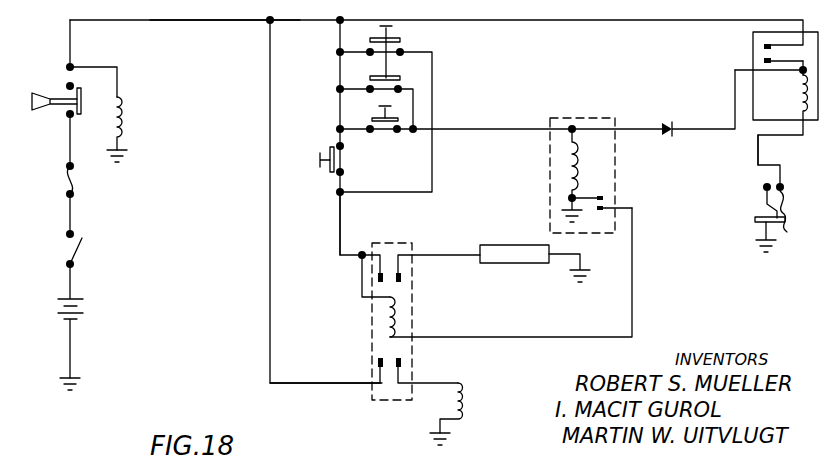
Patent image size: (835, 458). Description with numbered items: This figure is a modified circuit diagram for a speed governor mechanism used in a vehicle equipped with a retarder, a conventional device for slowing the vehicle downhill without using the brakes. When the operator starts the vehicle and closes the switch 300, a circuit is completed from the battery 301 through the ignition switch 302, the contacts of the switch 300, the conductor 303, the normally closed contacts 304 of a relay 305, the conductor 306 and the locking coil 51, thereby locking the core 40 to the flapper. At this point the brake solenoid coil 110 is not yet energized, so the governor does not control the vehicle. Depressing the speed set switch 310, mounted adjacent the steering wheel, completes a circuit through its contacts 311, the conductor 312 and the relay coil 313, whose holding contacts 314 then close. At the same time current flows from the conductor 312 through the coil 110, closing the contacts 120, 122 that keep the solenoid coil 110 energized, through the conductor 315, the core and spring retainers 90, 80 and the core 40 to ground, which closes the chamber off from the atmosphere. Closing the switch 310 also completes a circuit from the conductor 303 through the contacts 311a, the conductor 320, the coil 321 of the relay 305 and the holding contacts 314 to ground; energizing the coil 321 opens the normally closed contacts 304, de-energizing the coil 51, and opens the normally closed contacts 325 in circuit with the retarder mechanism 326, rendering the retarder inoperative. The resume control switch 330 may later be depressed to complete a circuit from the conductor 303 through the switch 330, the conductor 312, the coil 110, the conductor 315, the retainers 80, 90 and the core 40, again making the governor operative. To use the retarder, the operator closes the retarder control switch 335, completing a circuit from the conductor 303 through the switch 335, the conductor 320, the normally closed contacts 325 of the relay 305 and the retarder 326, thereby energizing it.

The switch 300 is at (54, 85).
The battery 301 is at (84, 306).
The ignition switch 302 is at (84, 248).
The conductor 303 is at (205, 22).
The normally closed contacts 304 is at (402, 363).
The relay 305 is at (377, 323).
The conductor 306 is at (432, 385).
The speed set switch 310 is at (393, 27).
The contacts 311 is at (377, 82).
The contacts 311a is at (376, 60).
The conductor 312 is at (514, 130).
The relay coil 313 is at (578, 165).
The holding contacts 314 is at (604, 200).
The conductor 315 is at (758, 154).
The conductor 320 is at (340, 216).
The coil 321 is at (385, 305).
The normally closed contacts 325 is at (393, 253).
The retarder mechanism 326 is at (494, 263).
The resume control switch 330 is at (380, 107).
The retarder control switch 335 is at (322, 168).
The locking coil 51 is at (463, 393).
The brake solenoid coil 110 is at (800, 96).
The contacts 120 is at (764, 47).
The contacts 122 is at (764, 61).
The core retainer 90 is at (768, 203).
The spring retainer 80 is at (783, 197).
The core 40 is at (762, 222).